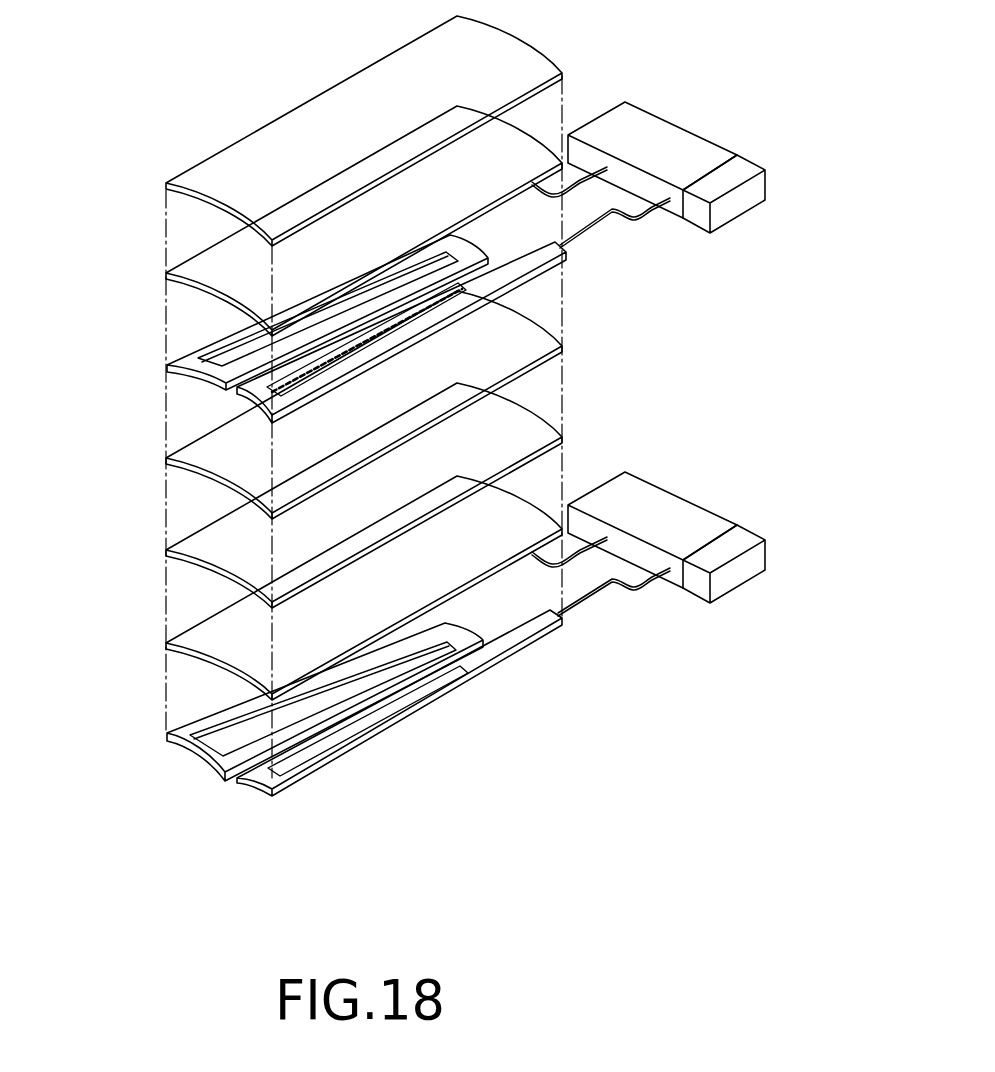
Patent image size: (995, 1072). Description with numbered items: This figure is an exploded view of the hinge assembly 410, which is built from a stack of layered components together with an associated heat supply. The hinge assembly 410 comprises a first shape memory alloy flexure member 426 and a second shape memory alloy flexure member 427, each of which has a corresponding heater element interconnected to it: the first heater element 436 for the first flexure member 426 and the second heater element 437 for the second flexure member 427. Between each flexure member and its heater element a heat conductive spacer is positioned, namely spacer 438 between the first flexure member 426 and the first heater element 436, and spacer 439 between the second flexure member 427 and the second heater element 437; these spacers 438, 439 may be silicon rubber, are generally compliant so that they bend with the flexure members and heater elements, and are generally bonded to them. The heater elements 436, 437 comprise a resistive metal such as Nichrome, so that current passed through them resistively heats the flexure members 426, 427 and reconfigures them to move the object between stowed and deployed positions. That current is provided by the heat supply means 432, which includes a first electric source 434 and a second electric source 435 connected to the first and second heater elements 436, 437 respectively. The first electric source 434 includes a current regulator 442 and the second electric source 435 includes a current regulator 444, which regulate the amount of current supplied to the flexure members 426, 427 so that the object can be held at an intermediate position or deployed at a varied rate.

The hinge assembly 410 is at (121, 155).
The first shape memory alloy flexure member 426 is at (403, 129).
The heat conductive spacer member 438 is at (403, 236).
The first heater element 436 is at (167, 378).
The second shape memory alloy flexure member 427 is at (390, 512).
The heat conductive spacer member 439 is at (390, 616).
The second heater element 437 is at (198, 769).
The heat supply means 432 is at (752, 382).
The first electric source 434 is at (722, 158).
The current regulator 442 is at (770, 194).
The second electric source 435 is at (722, 525).
The current regulator 444 is at (770, 564).